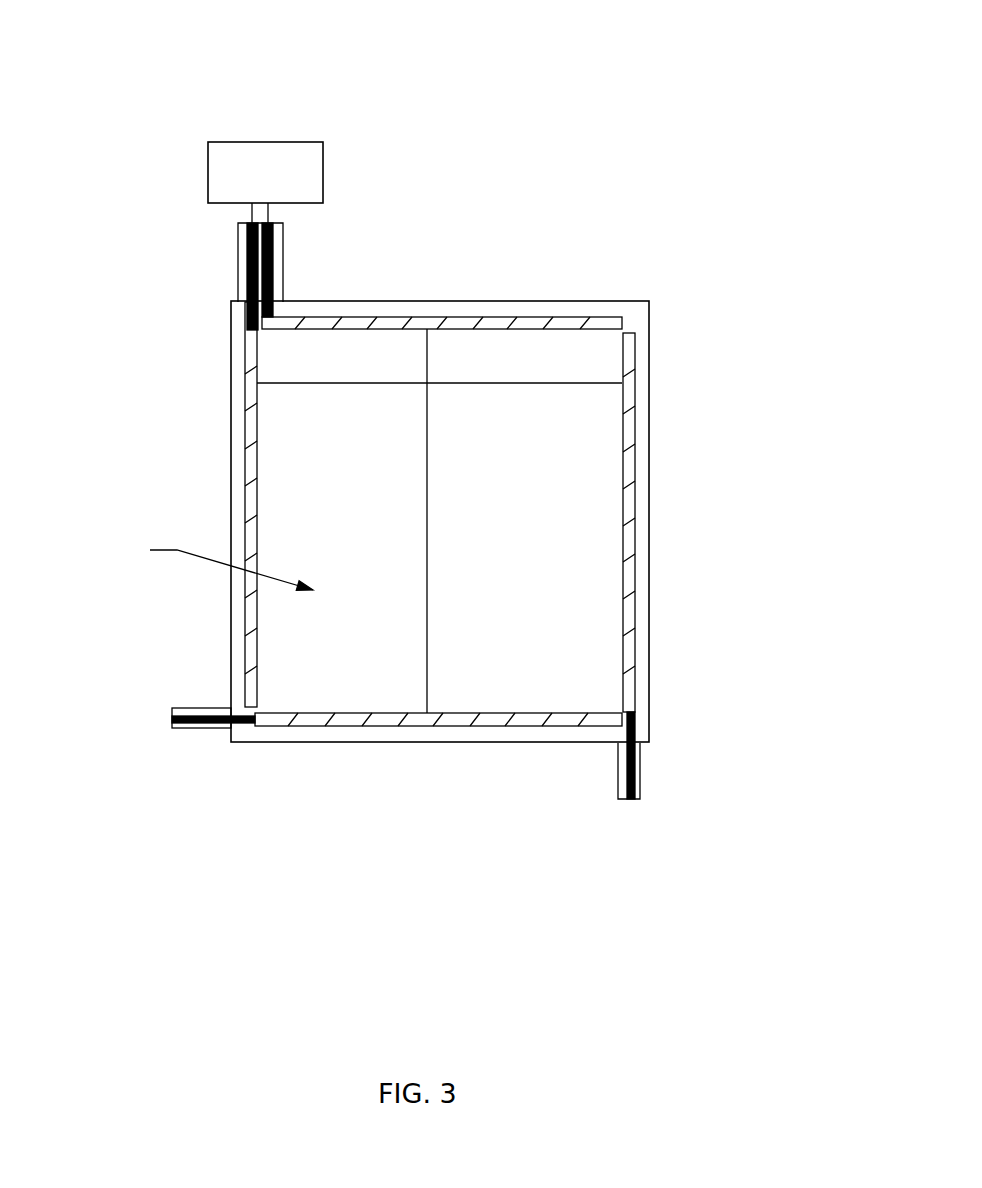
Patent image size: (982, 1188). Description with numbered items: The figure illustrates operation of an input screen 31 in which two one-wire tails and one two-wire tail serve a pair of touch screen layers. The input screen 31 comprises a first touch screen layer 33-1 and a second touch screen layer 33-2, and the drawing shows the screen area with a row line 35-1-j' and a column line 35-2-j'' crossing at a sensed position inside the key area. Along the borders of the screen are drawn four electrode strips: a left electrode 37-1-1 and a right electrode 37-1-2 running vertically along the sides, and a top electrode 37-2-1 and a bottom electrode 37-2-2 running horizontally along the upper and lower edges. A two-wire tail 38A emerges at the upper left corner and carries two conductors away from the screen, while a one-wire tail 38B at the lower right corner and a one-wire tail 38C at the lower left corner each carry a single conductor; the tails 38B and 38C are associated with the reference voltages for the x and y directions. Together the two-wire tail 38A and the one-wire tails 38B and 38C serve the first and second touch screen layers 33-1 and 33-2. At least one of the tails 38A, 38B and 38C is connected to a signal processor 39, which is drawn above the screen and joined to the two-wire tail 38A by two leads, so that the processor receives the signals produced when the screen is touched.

The input screen 31 is at (447, 418).
The first touch screen layer 33-1 is at (546, 521).
The second touch screen layer 33-2 is at (546, 521).
The row conductor line 35-1-j' is at (439, 411).
The column conductor line 35-2-j'' is at (498, 521).
The left side electrode 37-1-1 is at (166, 504).
The right side electrode 37-1-2 is at (723, 522).
The top side electrode 37-2-1 is at (442, 287).
The bottom side electrode 37-2-2 is at (438, 757).
The two-wire tail 38A is at (328, 276).
The one-wire tail 38B is at (689, 772).
The one-wire tail 38C is at (155, 699).
The signal processor 39 is at (315, 171).